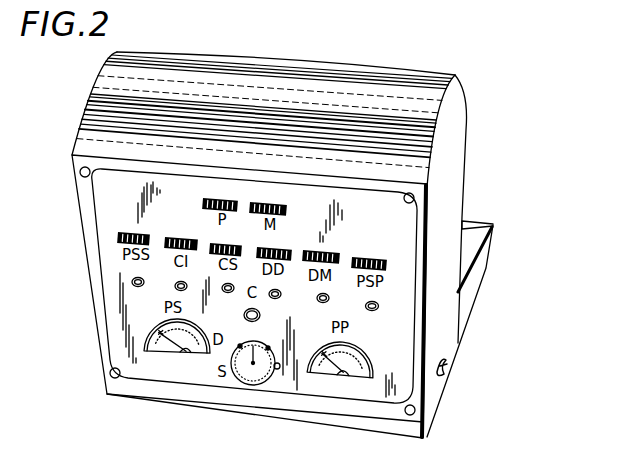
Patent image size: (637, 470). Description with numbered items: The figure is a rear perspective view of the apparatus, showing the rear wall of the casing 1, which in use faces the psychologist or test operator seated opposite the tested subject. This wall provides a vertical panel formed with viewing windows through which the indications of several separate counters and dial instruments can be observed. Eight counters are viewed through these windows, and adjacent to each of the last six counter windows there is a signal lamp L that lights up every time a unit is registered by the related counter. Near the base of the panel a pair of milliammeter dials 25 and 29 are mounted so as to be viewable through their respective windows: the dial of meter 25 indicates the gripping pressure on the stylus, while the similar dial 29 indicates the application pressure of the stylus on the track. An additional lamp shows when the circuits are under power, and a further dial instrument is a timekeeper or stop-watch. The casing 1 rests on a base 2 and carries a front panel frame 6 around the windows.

The casing 1 is at (450, 160).
The base 2 is at (482, 248).
The front panel frame 6 is at (114, 210).
The milliammeter dial 25 is at (343, 372).
The milliammeter dial 29 is at (147, 333).
The signal lamp L is at (178, 288).